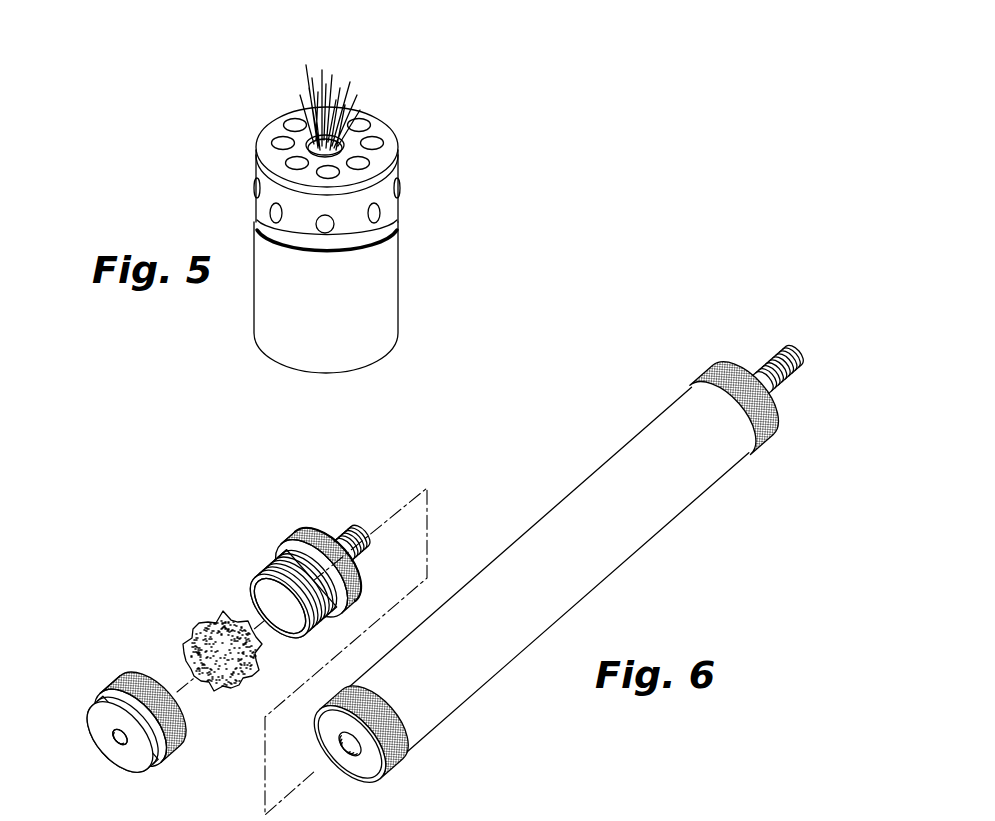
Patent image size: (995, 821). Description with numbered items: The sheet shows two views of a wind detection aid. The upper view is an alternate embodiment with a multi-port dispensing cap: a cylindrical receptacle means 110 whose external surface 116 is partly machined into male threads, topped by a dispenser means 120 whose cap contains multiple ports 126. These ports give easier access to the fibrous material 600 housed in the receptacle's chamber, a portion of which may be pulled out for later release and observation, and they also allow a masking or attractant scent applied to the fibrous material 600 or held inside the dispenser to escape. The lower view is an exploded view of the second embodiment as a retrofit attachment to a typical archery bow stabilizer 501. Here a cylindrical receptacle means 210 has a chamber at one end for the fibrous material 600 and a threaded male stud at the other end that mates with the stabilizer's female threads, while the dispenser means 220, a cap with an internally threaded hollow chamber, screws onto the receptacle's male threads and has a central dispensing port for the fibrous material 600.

In FIG. 5, the cylindrical receptacle means 110 is at (347, 201).
In FIG. 5, the external surface 116 is at (343, 331).
In FIG. 5, the dispenser means 120 is at (324, 158).
In FIG. 5, the multiple ports 126 is at (257, 178).
In FIG. 5, the fibrous material 600 is at (308, 102).
In FIG. 6, the fibrous material 600 is at (193, 627).
In FIG. 6, the bow stabilizer 501 is at (558, 583).
In FIG. 6, the cylindrical receptacle means 210 is at (315, 558).
In FIG. 6, the dispenser means 220 is at (124, 723).